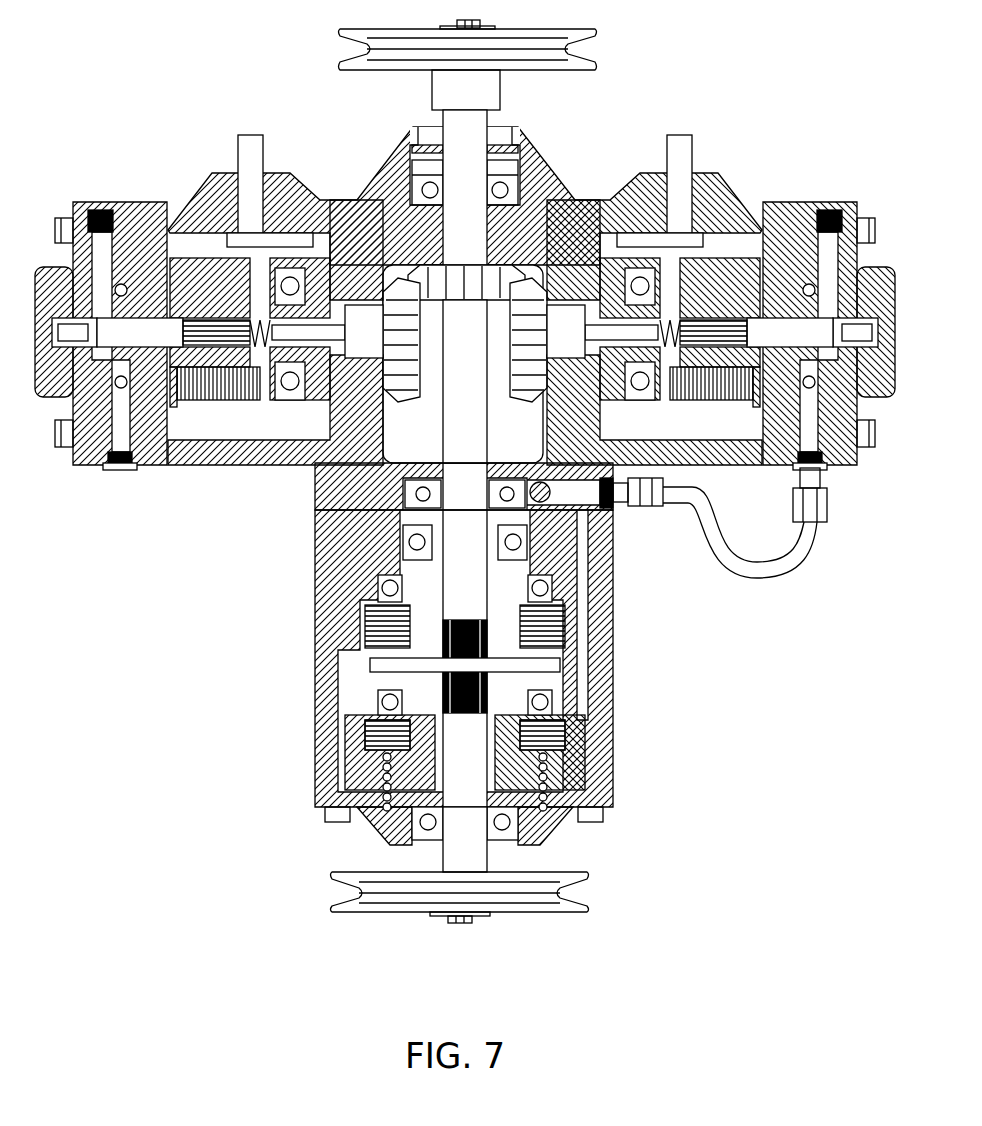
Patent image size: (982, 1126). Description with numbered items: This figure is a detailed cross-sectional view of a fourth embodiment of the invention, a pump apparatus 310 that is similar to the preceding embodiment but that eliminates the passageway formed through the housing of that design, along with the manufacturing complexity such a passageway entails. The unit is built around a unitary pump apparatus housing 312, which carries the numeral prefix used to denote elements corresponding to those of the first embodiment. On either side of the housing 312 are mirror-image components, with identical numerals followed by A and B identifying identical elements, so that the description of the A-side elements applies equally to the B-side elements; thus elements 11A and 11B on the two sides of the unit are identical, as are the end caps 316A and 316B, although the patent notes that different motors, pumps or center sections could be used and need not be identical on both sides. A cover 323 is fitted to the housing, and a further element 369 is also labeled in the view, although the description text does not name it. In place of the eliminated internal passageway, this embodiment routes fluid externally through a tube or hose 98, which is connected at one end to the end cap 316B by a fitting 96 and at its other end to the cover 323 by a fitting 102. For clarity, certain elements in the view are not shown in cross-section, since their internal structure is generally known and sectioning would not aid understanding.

The pump apparatus 310 is at (770, 72).
The unitary pump apparatus housing 312 is at (388, 153).
The element A 11A is at (178, 167).
The element B 11B is at (753, 172).
The end cap 316A is at (135, 203).
The end cap 316B is at (800, 210).
The cover 323 is at (322, 482).
The clutch housing 369 is at (605, 668).
The fitting 102 is at (618, 510).
The fitting 96 is at (827, 503).
The tube or hose 98 is at (757, 580).